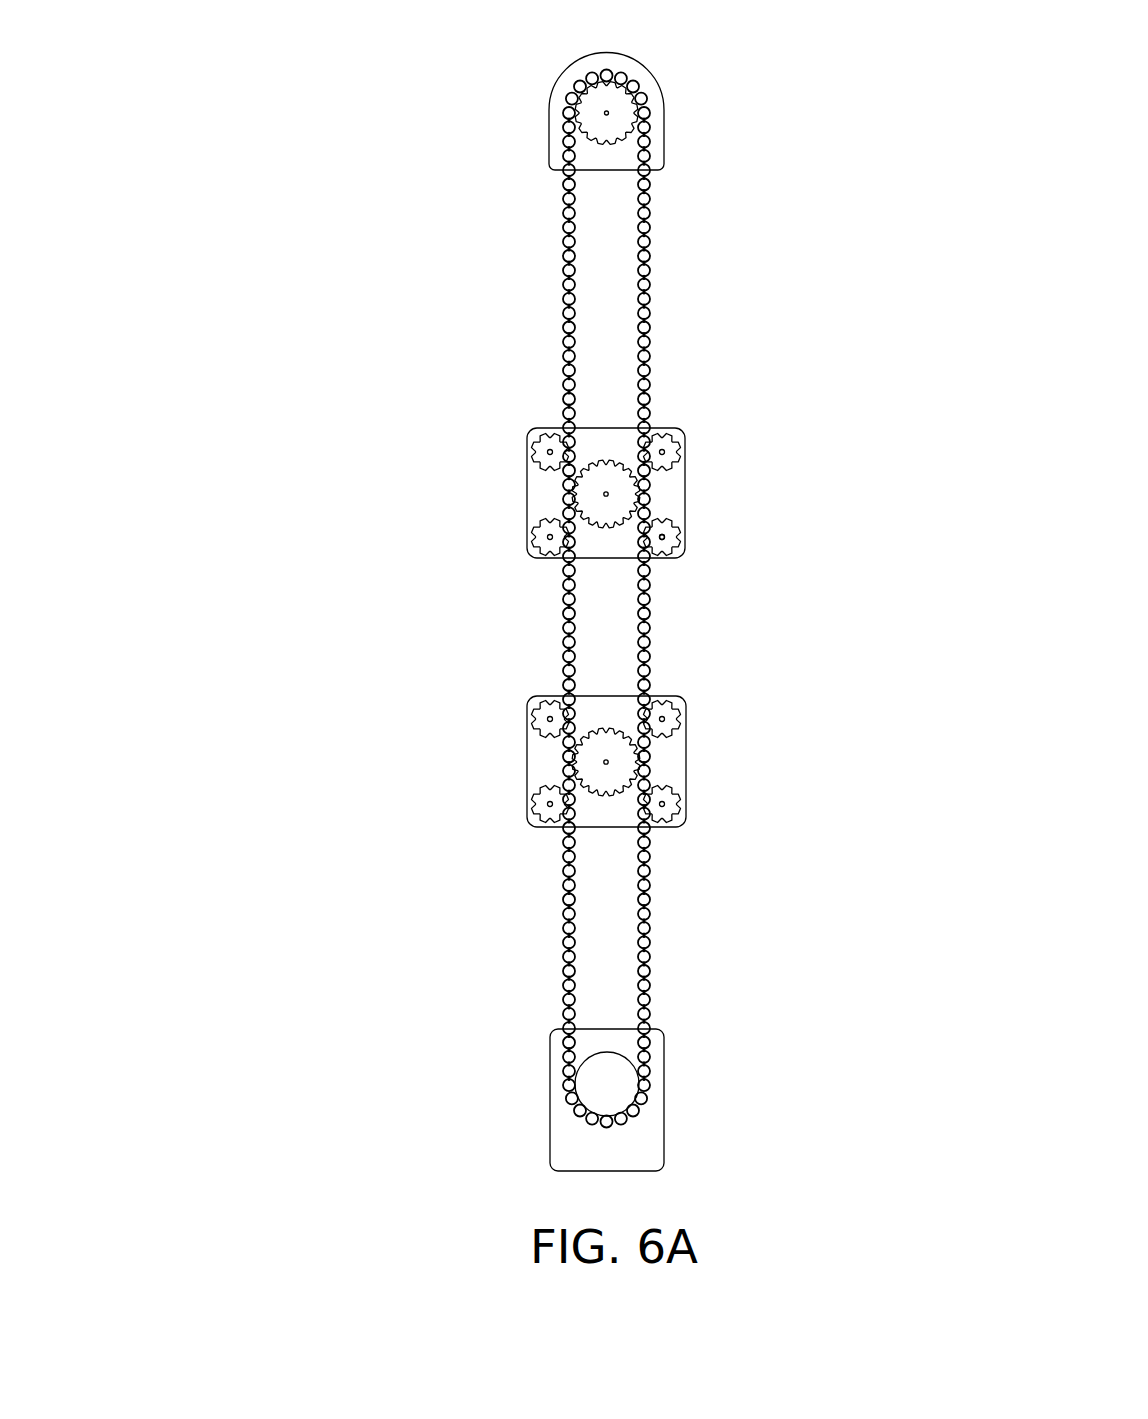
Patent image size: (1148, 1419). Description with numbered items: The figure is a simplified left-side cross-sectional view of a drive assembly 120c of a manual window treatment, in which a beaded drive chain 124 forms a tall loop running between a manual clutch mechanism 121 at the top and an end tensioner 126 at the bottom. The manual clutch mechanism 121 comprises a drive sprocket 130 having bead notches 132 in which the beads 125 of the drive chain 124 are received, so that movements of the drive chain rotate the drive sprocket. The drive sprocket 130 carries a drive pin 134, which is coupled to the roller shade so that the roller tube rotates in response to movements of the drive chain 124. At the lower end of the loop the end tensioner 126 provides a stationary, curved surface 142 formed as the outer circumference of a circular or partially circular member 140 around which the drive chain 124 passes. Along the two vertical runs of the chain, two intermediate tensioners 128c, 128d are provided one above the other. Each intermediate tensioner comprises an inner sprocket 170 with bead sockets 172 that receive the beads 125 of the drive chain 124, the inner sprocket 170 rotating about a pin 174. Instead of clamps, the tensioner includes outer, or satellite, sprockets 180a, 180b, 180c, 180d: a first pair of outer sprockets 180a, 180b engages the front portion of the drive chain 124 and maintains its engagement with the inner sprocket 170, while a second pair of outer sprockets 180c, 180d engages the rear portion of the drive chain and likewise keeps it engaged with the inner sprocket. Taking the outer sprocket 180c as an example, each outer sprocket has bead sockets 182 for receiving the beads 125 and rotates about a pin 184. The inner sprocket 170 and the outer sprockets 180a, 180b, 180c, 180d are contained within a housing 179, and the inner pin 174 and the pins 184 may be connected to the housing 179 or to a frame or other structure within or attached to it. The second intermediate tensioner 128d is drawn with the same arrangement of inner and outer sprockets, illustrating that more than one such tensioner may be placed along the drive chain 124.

The drive assembly 120c is at (499, 587).
The manual clutch mechanism 121 is at (578, 122).
The drive chain 124 is at (649, 616).
The beads 125 is at (654, 175).
The end tensioner 126 is at (654, 1087).
The intermediate tensioner 128c is at (639, 518).
The intermediate tensioner 128d is at (686, 759).
The drive sprocket 130 is at (645, 122).
The bead notches 132 is at (606, 158).
The drive pin 134 is at (568, 63).
The circular member 140 is at (564, 1059).
The curved surface 142 is at (569, 1127).
The inner sprocket 170 is at (549, 503).
The bead sockets 172 is at (606, 539).
The pin 174 is at (608, 442).
The housing 179 is at (571, 546).
The outer sprocket 180a is at (501, 437).
The outer sprocket 180b is at (503, 548).
The outer sprocket 180c is at (714, 566).
The outer sprocket 180d is at (699, 422).
The bead sockets 182 is at (712, 578).
The pin 184 is at (717, 550).